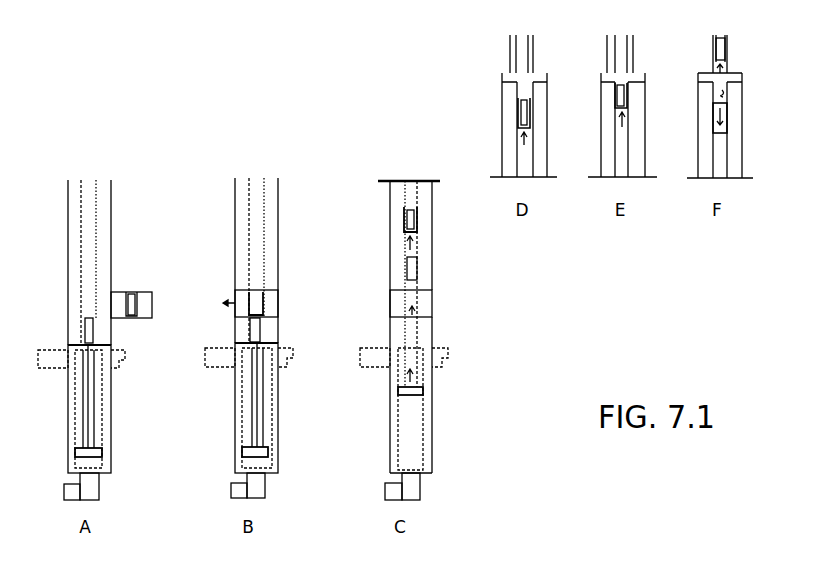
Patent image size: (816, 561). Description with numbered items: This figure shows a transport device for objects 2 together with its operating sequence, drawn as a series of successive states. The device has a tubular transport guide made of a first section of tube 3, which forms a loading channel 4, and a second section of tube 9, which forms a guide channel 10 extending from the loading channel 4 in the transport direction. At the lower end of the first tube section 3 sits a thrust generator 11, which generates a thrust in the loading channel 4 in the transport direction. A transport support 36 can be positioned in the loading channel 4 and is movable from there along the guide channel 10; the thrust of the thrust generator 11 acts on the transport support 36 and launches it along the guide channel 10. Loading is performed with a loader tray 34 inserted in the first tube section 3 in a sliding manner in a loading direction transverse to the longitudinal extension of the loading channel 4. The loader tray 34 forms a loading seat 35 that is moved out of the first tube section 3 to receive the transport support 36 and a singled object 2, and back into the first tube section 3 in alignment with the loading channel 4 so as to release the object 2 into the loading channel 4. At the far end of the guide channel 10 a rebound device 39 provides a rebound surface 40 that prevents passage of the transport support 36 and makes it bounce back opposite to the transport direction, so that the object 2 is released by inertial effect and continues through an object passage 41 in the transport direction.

The object 2 is at (125, 310).
The first section of tube 3 is at (70, 319).
The loading channel 4 is at (88, 284).
The second section of tube 9 is at (75, 208).
The guide channel 10 is at (94, 203).
The thrust generator 11 is at (108, 425).
The loader tray 34 is at (143, 292).
The loading seat 35 is at (131, 285).
The transport support 36 is at (141, 306).
The rebound device 39 is at (534, 80).
The rebound surface 40 is at (726, 93).
The object passage 41 is at (713, 78).